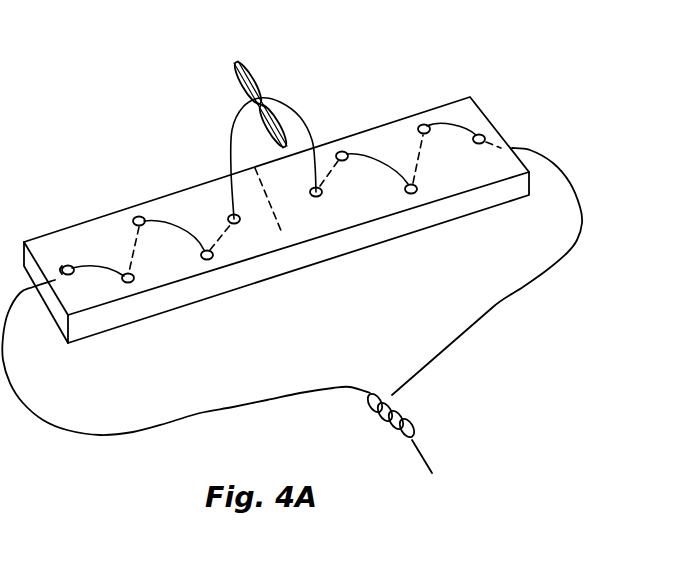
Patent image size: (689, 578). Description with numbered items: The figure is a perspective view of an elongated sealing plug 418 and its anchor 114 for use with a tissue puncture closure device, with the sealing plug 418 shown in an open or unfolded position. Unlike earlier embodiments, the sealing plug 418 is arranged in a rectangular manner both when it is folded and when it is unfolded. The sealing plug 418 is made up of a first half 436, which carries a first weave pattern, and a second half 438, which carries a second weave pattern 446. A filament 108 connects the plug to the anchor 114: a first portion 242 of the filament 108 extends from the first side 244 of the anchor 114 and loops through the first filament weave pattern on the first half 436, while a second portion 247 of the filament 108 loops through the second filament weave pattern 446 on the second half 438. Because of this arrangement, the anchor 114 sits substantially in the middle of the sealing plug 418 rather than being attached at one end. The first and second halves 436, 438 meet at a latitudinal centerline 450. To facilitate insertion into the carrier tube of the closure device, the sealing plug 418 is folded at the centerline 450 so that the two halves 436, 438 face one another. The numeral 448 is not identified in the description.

The filament 108 is at (275, 101).
The anchor 114 is at (234, 64).
The first portion of the filament 242 is at (313, 137).
The first side of the anchor 244 is at (270, 89).
The second portion of the filament 247 is at (230, 153).
The sealing plug 418 is at (382, 98).
The first half 436 is at (405, 217).
The second half 438 is at (197, 293).
The second weave pattern 446 is at (190, 224).
The second direction arrow 448 is at (370, 190).
The latitudinal centerline 450 is at (282, 233).